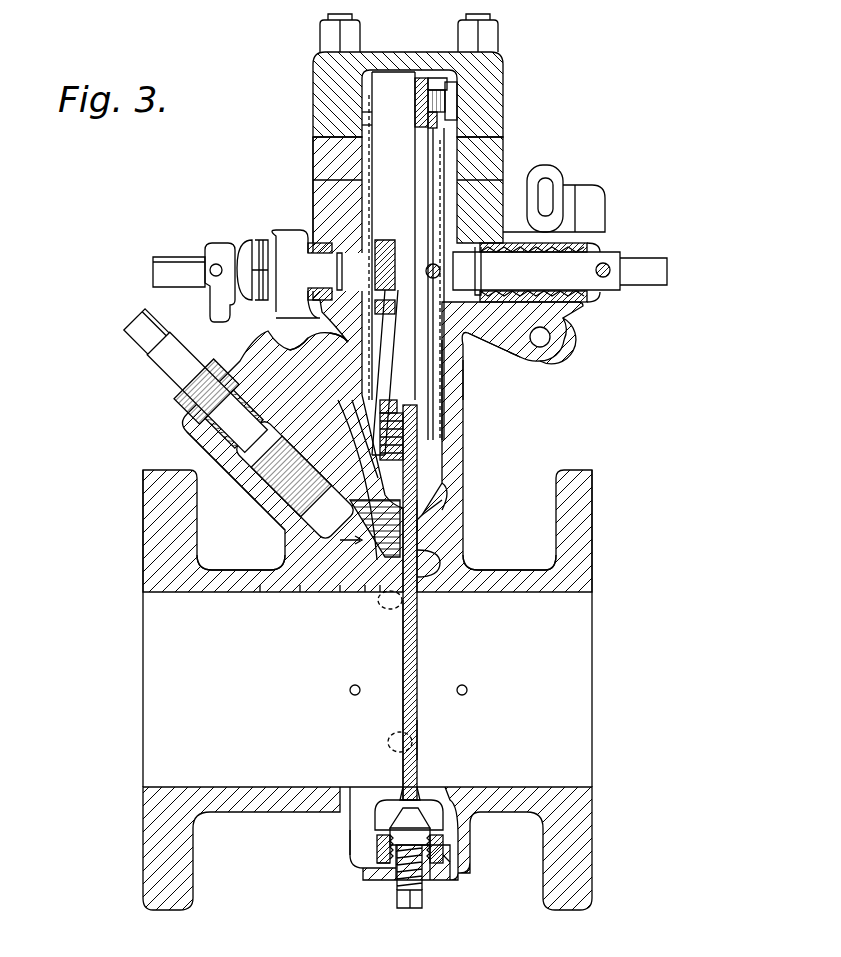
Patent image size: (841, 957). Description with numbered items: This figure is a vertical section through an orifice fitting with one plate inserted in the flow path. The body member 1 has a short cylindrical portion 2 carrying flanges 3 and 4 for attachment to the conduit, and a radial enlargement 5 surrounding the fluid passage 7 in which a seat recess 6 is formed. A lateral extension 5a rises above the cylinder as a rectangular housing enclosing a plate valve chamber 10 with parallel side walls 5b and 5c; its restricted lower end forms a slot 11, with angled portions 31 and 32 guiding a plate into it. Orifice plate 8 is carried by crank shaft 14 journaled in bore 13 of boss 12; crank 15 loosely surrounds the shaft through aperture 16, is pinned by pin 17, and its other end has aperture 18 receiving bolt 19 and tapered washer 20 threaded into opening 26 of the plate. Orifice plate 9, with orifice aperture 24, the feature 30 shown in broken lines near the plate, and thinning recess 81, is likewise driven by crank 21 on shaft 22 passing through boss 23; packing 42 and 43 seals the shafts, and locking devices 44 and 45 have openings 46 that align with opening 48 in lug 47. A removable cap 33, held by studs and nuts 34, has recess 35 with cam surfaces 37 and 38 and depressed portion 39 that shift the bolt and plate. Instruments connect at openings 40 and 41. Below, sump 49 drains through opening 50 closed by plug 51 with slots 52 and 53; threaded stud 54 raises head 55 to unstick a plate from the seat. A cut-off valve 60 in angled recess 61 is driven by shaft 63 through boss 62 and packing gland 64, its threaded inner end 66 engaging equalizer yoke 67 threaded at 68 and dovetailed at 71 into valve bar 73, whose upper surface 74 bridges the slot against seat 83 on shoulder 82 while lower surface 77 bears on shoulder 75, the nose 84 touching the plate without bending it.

The body member 1 is at (473, 416).
The cylindrical portion 2 is at (497, 576).
The flange 3 is at (580, 500).
The flange 4 is at (150, 500).
The radial enlargement 5 is at (352, 838).
The lateral extension 5a is at (318, 196).
The side wall 5b is at (360, 348).
The side wall 5c is at (465, 372).
The seat recess 6 is at (417, 790).
The fluid passage 7 is at (585, 720).
The orifice plate 8 is at (415, 196).
The orifice plate 9 is at (417, 480).
The plate valve chamber 10 is at (444, 388).
The slot 11 is at (420, 516).
The boss 12 is at (552, 246).
The bore 13 is at (494, 345).
The crank shaft 14 is at (578, 264).
The crank 15 is at (428, 155).
The aperture 16 is at (435, 300).
The pin 17 is at (426, 272).
The aperture 18 is at (458, 122).
The bolt 19 is at (447, 98).
The tapered washer 20 is at (447, 80).
The crank 21 is at (385, 366).
The shaft 22 is at (182, 264).
The boss 23 is at (290, 230).
The orifice aperture 24 is at (404, 668).
The threaded opening 26 is at (420, 440).
The opening 30 is at (388, 742).
The angled wall portion 31 is at (440, 500).
The angled wall portion 32 is at (446, 492).
The removable cap 33 is at (340, 80).
The studs and nuts 34 is at (322, 40).
The recess 35 is at (380, 92).
The cam surface 37 is at (362, 118).
The cam surface 38 is at (458, 134).
The depressed portion 39 is at (365, 125).
The connection opening 40 is at (468, 690).
The connection opening 41 is at (350, 690).
The packing 42 is at (556, 318).
The packing 43 is at (330, 256).
The locking device 44 is at (582, 190).
The locking device 45 is at (212, 306).
The opening 46 is at (545, 186).
The lug 47 is at (562, 350).
The opening 48 is at (542, 348).
The sump 49 is at (388, 800).
The drain opening 50 is at (444, 845).
The plug 51 is at (428, 878).
The longitudinal slot 52 is at (446, 856).
The longitudinal slot 53 is at (377, 856).
The threaded stud 54 is at (397, 892).
The head 55 is at (430, 816).
The cut-off valve 60 is at (277, 506).
The rectangular recess 61 is at (342, 592).
The boss 62 is at (240, 478).
The shaft 63 is at (178, 397).
The packing gland 64 is at (190, 397).
The threaded inner end 66 is at (269, 496).
The equalizer yoke 67 is at (247, 481).
The threaded central section 68 is at (258, 524).
The dovetail 71 is at (350, 473).
The valve bar 73 is at (305, 592).
The upper surface 74 is at (366, 592).
The shoulder 75 is at (382, 592).
The lower surface 77 is at (265, 592).
The recess 81 is at (419, 736).
The shoulder 82 is at (436, 528).
The seat 83 is at (428, 562).
The nose 84 is at (371, 541).